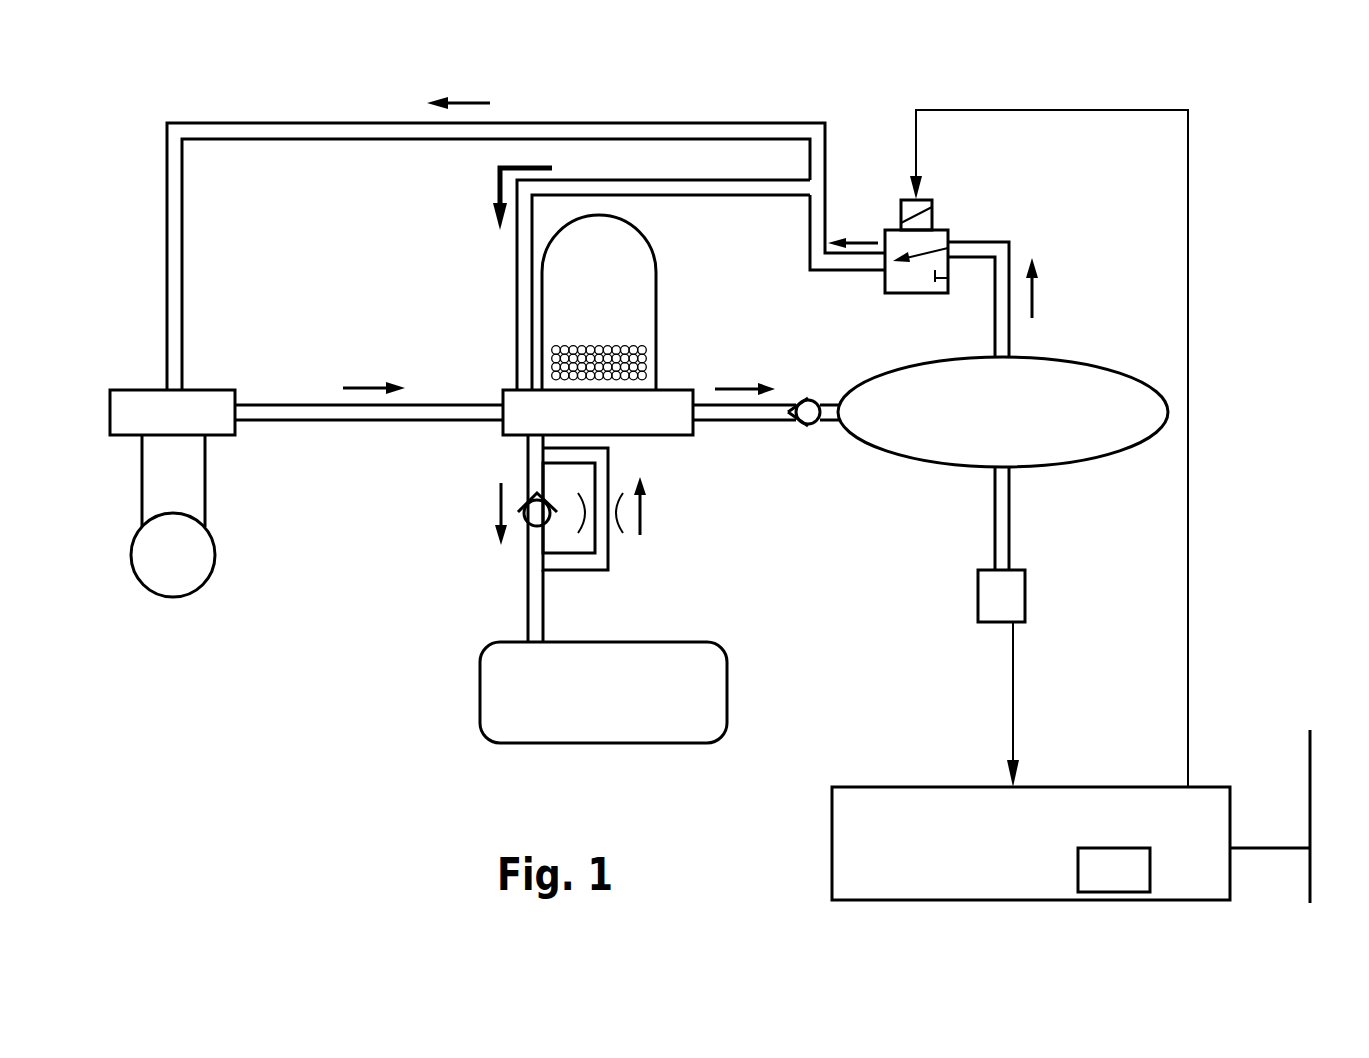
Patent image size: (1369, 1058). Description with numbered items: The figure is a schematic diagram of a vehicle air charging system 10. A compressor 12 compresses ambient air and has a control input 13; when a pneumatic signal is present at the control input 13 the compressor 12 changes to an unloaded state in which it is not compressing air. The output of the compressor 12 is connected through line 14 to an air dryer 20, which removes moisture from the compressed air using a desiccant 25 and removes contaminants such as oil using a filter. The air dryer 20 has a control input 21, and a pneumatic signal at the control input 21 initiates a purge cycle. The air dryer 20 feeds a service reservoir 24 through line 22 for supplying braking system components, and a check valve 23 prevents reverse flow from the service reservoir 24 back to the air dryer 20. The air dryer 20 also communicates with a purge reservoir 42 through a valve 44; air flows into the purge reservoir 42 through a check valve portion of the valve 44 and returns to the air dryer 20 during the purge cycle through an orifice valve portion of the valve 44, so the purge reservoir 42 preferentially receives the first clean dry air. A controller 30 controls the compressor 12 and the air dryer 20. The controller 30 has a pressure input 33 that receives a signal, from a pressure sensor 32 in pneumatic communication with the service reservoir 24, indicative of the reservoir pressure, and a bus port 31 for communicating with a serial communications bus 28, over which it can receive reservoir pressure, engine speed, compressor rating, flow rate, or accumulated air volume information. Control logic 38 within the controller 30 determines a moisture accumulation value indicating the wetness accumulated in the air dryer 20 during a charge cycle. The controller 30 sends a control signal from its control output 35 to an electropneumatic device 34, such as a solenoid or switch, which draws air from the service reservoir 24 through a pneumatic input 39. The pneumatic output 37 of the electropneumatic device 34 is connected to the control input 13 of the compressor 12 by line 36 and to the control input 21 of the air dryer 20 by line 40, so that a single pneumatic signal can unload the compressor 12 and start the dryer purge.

The air charging system 10 is at (350, 725).
The compressor 12 is at (222, 583).
The control input 13 is at (182, 390).
The line 14 is at (315, 420).
The air dryer 20 is at (674, 311).
The control input 21 is at (517, 388).
The line 22 is at (748, 420).
The check valve 23 is at (806, 400).
The service reservoir 24 is at (1065, 358).
The desiccant 25 is at (646, 363).
The serial communications bus 28 is at (1310, 770).
The controller 30 is at (818, 843).
The bus port 31 is at (1232, 848).
The pressure sensor 32 is at (978, 595).
The pressure input 33 is at (1015, 787).
The electropneumatic device 34 is at (932, 230).
The control output 35 is at (1190, 785).
The line 36 is at (669, 123).
The pneumatic output 37 is at (885, 250).
The control logic 38 is at (1117, 848).
The pneumatic input 39 is at (948, 242).
The line 40 is at (517, 292).
The purge reservoir 42 is at (727, 697).
The valve 44 is at (620, 528).